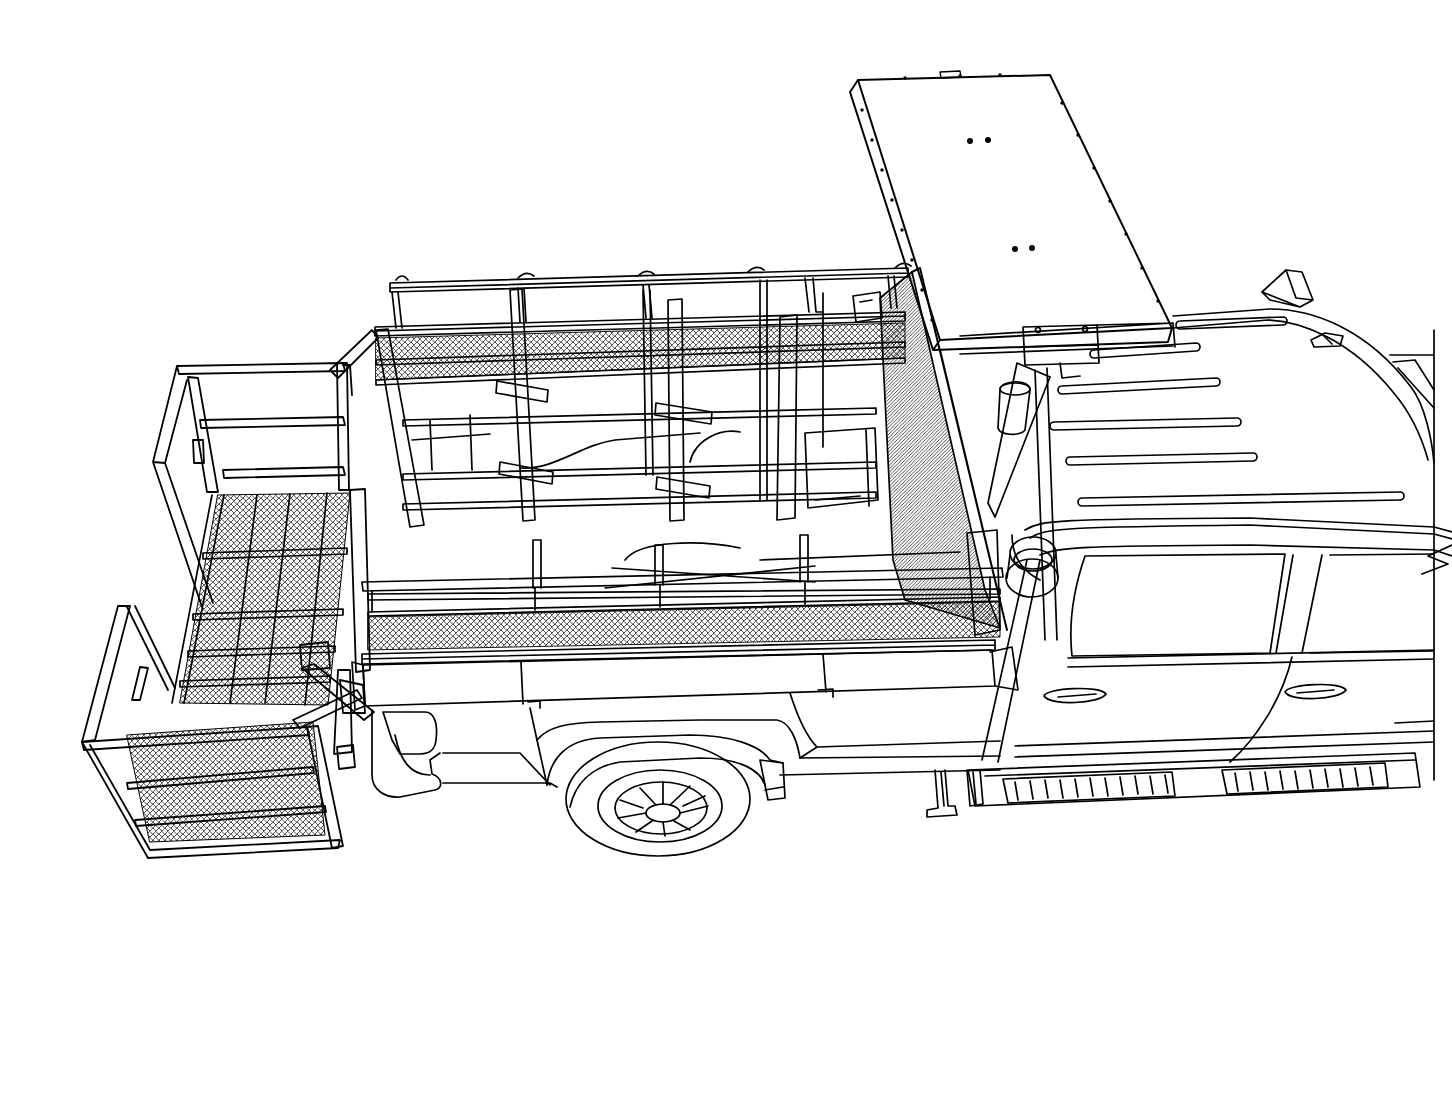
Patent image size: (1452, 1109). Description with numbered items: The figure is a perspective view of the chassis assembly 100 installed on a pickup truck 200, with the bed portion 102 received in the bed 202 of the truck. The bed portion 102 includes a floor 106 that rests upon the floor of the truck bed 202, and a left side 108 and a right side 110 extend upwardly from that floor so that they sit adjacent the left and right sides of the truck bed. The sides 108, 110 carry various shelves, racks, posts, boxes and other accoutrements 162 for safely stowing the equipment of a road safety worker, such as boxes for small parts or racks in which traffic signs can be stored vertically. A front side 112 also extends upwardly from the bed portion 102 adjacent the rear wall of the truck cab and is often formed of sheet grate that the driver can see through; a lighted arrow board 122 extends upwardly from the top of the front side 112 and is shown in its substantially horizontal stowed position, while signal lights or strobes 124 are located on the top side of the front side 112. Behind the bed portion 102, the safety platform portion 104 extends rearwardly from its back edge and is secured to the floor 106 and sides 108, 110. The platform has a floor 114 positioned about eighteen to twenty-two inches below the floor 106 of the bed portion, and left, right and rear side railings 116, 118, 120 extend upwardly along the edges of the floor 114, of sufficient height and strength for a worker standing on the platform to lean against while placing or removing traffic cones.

The chassis assembly 100 is at (269, 184).
The bed portion 102 is at (708, 274).
The safety platform portion 104 is at (252, 356).
The floor 106 is at (843, 540).
The left side 108 is at (598, 282).
The right side 110 is at (452, 585).
The front side 112 is at (885, 280).
The floor 114 is at (195, 608).
The left side railing 116 is at (208, 370).
The right side railing 118 is at (222, 848).
The rear side railing 120 is at (158, 432).
The lighted arrow board 122 is at (1068, 173).
The signal lights or strobes 124 is at (1052, 560).
The accoutrements 162 is at (512, 360).
The pickup truck 200 is at (1333, 249).
The bed 202 is at (500, 722).